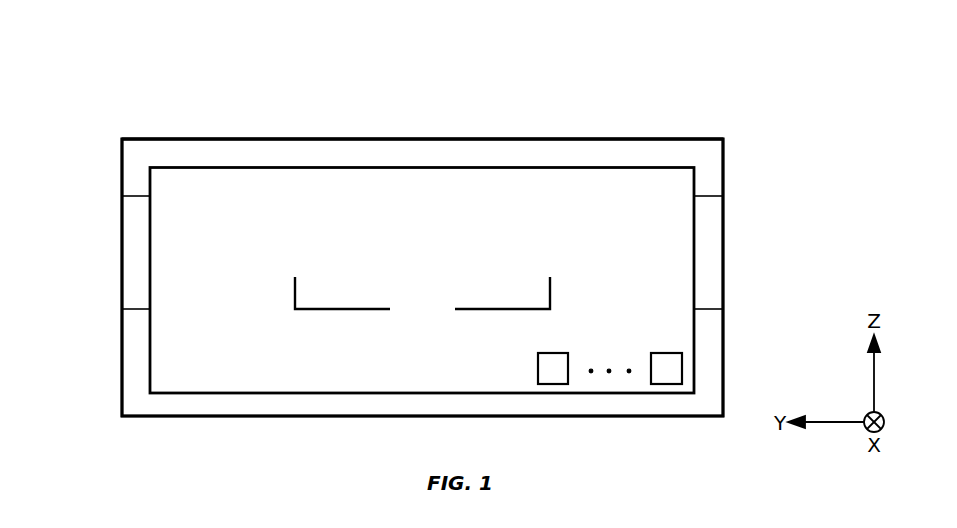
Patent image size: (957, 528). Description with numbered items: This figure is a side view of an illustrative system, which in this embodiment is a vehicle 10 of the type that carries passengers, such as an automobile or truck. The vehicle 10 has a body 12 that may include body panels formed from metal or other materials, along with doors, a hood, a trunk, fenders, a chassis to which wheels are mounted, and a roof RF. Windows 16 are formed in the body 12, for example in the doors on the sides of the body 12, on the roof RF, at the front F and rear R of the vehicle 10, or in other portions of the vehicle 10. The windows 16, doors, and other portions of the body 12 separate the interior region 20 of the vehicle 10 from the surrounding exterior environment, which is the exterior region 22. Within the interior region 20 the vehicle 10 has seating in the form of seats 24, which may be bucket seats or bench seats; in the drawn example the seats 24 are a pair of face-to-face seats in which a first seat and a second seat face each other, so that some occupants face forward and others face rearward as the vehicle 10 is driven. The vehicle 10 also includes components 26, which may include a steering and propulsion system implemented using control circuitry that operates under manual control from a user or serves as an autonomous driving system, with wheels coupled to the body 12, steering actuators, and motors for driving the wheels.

The vehicle 10 is at (686, 81).
The body 12 is at (640, 146).
The windows 16 is at (132, 289).
The interior region 20 is at (180, 365).
The exterior region 22 is at (200, 97).
The seats 24 is at (368, 309).
The components 26 is at (674, 360).
The roof RF is at (421, 147).
The front F is at (99, 235).
The rear R is at (753, 233).